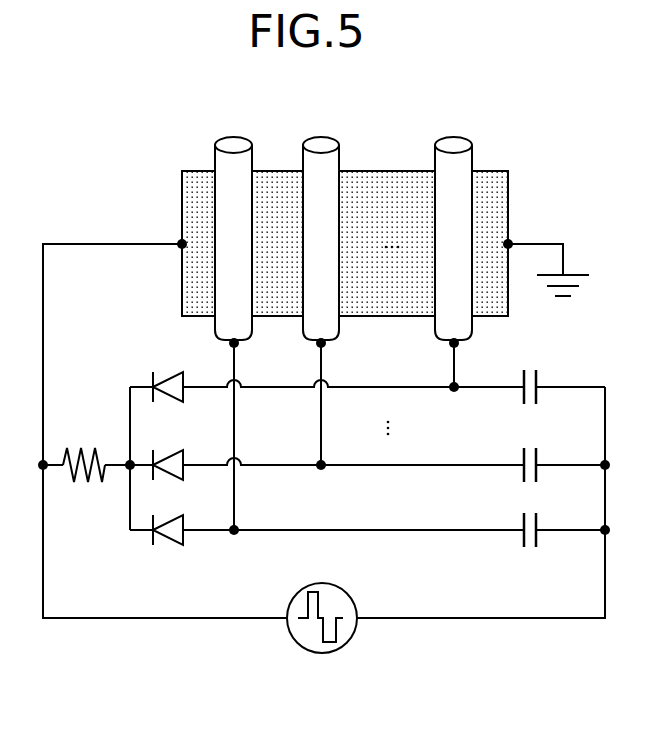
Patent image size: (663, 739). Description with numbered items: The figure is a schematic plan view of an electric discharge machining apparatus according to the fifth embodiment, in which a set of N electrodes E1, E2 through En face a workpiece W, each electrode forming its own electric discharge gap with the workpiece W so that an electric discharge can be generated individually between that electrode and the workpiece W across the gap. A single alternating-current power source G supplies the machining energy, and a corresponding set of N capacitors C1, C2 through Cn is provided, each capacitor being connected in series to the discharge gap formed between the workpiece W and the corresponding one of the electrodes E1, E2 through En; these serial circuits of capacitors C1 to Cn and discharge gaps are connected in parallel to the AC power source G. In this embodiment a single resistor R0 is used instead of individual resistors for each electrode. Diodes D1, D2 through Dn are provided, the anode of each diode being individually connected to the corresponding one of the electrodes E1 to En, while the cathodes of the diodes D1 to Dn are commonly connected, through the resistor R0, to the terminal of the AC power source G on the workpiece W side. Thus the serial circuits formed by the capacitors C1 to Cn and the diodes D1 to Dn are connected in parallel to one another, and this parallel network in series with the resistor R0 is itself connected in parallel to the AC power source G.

The workpiece W is at (182, 190).
The electrode E1 is at (236, 137).
The electrode E2 is at (321, 137).
The electrode En is at (454, 137).
The resistor R0 is at (97, 452).
The diode Dn is at (185, 386).
The diode D2 is at (185, 464).
The diode D1 is at (185, 529).
The capacitor Cn is at (539, 374).
The capacitor C2 is at (539, 452).
The capacitor C1 is at (539, 517).
The AC power source G is at (347, 586).